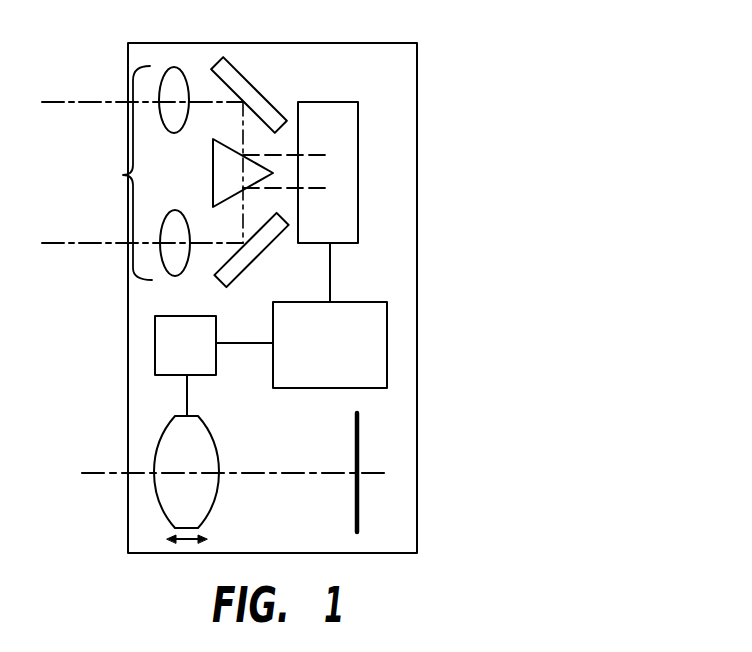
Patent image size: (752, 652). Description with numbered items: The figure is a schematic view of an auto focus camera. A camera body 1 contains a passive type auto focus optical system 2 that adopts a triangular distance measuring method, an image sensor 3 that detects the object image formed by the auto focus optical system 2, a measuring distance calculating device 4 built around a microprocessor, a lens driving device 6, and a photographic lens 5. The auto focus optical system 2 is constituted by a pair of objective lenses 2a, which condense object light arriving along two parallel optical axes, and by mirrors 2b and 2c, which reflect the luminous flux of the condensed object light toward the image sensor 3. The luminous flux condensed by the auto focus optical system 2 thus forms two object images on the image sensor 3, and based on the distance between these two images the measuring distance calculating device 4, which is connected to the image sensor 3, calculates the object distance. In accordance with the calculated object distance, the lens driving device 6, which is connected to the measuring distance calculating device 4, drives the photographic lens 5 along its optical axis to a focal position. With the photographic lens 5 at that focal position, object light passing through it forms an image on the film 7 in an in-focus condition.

The camera body 1 is at (417, 115).
The auto focus optical system 2 is at (123, 175).
The objective lenses 2a is at (172, 67).
The mirrors 2b is at (252, 82).
The mirror 2c is at (213, 181).
The image sensor 3 is at (335, 102).
The measuring distance calculating device 4 is at (356, 302).
The photographic lens 5 is at (218, 497).
The lens driving device 6 is at (208, 375).
The film 7 is at (357, 433).